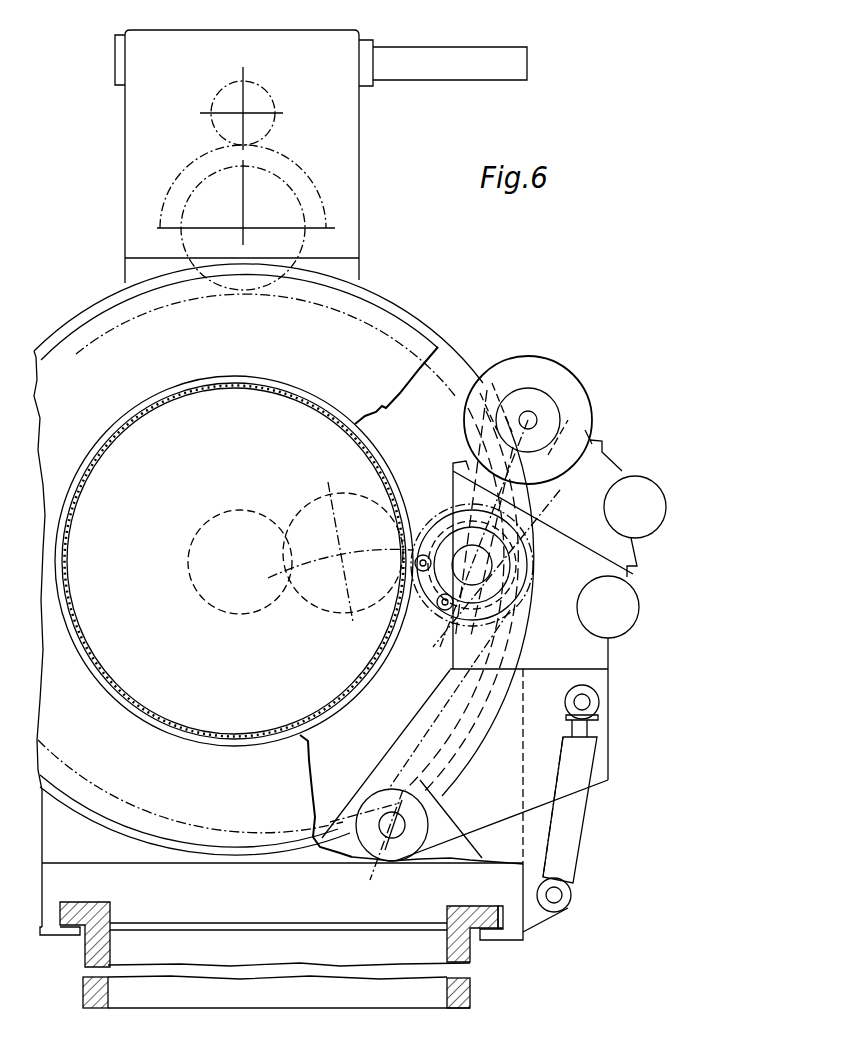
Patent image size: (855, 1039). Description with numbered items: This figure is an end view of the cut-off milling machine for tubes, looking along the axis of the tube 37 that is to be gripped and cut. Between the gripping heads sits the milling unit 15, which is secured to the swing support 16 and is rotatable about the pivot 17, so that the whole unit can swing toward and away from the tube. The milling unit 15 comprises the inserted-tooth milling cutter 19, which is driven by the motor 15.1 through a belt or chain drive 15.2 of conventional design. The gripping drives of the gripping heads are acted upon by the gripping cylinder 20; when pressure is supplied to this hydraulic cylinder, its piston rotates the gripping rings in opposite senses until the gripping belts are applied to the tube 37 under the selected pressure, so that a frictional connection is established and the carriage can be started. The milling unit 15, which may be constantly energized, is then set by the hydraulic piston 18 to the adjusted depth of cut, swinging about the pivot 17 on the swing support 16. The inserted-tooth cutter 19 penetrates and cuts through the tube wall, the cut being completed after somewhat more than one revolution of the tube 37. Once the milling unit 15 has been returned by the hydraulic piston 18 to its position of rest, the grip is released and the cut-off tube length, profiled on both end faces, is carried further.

The milling unit 15 is at (582, 485).
The motor 15.1 is at (532, 372).
The belt or chain drive 15.2 is at (593, 417).
The swing support 16 is at (547, 720).
The pivot 17 is at (389, 848).
The hydraulic piston 18 is at (572, 850).
The inserted-tooth milling cutter 19 is at (463, 630).
The gripping cylinder 20 is at (460, 68).
The tube 37 is at (166, 718).